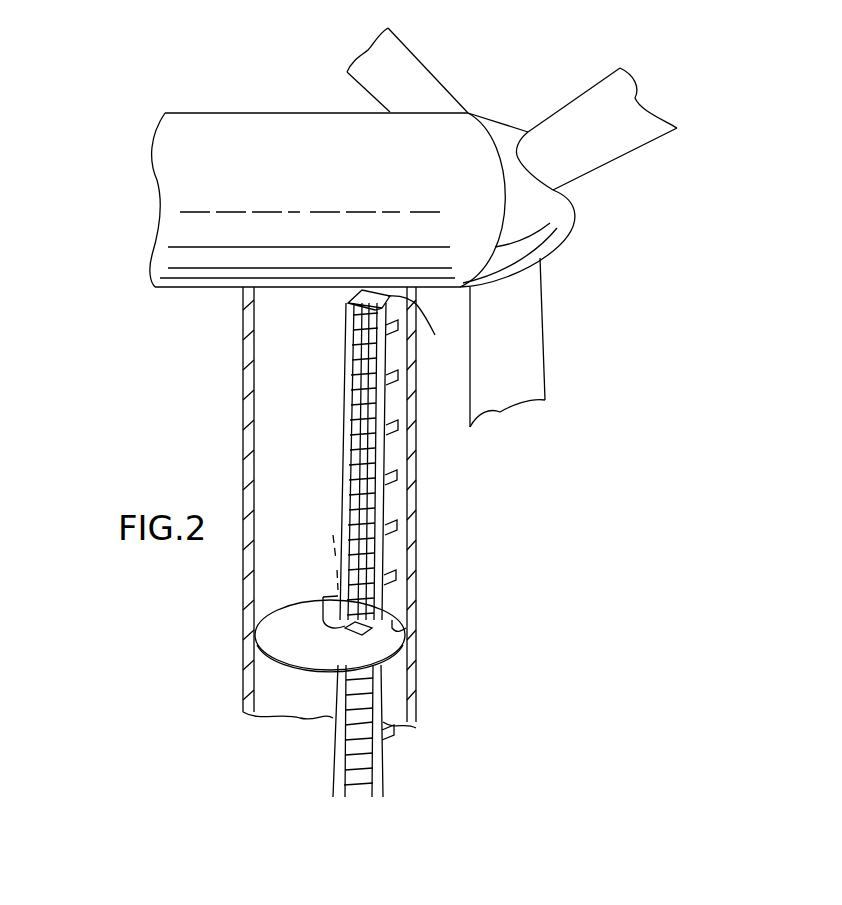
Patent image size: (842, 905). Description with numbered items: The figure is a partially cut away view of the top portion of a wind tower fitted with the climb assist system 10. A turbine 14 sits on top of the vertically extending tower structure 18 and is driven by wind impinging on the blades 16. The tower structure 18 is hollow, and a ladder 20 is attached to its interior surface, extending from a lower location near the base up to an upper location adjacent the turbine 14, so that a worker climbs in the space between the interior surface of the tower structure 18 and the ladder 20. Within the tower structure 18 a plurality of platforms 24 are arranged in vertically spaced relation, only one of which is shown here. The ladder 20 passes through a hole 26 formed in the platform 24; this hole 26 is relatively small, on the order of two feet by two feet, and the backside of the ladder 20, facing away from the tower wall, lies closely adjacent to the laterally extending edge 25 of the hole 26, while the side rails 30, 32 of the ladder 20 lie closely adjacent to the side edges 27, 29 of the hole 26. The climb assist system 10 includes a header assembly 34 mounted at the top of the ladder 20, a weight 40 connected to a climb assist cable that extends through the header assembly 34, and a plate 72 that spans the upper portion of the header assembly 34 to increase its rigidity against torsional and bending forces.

The climb assist system 10 is at (371, 543).
The turbine 14 is at (170, 178).
The blades 16 is at (582, 90).
The tower structure 18 is at (243, 410).
The ladder 20 is at (385, 445).
The platform 24 is at (255, 628).
The laterally extending edge 25 is at (345, 632).
The hole 26 is at (322, 600).
The side edge 27 is at (328, 540).
The side edge 29 is at (408, 636).
The side rail 30 is at (386, 468).
The side rail 32 is at (345, 450).
The header assembly 34 is at (345, 303).
The weight 40 is at (355, 700).
The plate 72 is at (422, 329).